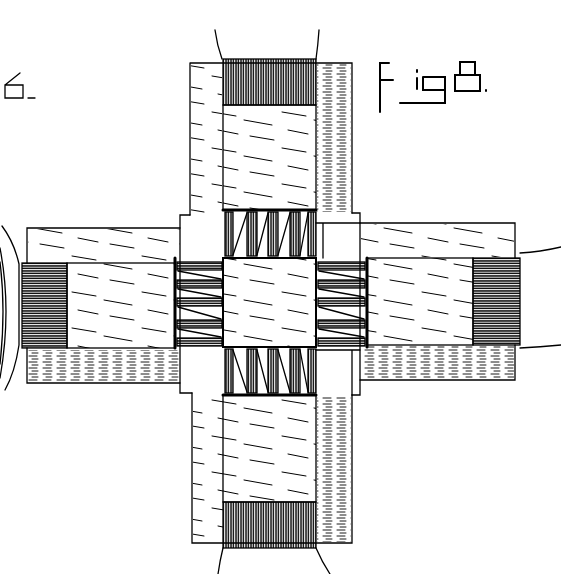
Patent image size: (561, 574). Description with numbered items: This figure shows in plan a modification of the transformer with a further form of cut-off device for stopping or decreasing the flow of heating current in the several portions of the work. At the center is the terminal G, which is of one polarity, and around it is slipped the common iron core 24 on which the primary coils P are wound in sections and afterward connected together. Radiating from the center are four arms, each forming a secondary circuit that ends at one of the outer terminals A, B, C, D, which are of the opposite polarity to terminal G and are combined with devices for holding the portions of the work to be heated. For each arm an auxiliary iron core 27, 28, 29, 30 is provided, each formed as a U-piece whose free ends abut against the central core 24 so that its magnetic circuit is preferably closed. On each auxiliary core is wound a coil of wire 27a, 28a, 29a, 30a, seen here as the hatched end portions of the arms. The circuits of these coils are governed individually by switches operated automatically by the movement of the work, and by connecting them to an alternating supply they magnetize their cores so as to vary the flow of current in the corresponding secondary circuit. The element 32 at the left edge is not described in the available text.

The iron core 24 is at (361, 222).
The auxiliary iron core 27 is at (480, 213).
The coil of wire 27a is at (508, 300).
The auxiliary iron core 28 is at (352, 479).
The coil of wire 28a is at (276, 548).
The auxiliary iron core 29 is at (113, 378).
The coil of wire 29a is at (32, 346).
The auxiliary iron core 30 is at (190, 152).
The coil of wire 30a is at (280, 62).
The hub 32 is at (12, 292).
The terminal A is at (131, 268).
The terminal B is at (440, 330).
The terminal C is at (300, 143).
The terminal D is at (243, 470).
The terminal G is at (248, 332).
The primary coil P is at (317, 212).